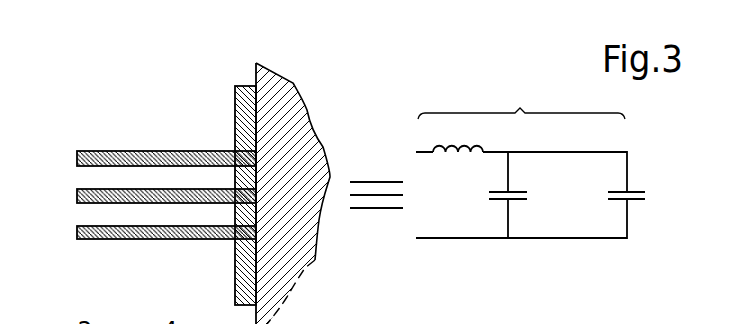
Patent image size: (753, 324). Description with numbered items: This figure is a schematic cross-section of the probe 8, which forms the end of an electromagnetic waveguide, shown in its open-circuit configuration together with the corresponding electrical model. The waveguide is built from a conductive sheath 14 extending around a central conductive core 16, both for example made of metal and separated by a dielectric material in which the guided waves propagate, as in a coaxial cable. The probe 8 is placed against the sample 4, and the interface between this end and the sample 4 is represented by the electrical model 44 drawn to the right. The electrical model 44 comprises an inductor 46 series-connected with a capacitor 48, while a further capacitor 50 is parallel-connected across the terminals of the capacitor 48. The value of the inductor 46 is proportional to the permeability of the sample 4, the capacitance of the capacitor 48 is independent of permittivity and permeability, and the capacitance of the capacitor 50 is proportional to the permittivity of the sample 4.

The sample 4 is at (288, 80).
The probe 8 is at (236, 76).
The conductive sheath 14 is at (77, 195).
The central conductive core 16 is at (115, 151).
The electrical model 44 is at (560, 159).
The inductor 46 is at (456, 139).
The capacitor 48 is at (492, 199).
The capacitor 50 is at (635, 192).